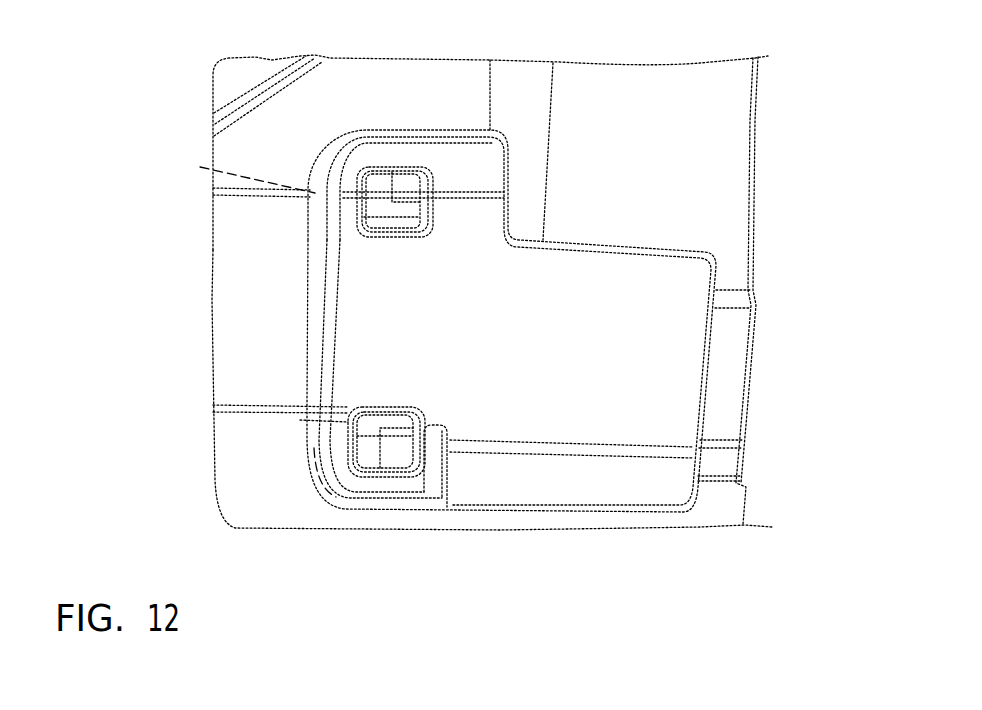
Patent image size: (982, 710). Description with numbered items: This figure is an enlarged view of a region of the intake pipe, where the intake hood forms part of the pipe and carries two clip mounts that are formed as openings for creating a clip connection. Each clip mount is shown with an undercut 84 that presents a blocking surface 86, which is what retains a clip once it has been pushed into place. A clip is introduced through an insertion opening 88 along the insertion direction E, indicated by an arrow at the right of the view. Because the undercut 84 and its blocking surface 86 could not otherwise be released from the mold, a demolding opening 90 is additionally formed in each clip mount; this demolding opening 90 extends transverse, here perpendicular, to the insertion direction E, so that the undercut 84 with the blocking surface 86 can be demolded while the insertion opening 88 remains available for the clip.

The undercut 84 is at (360, 238).
The blocking surface 86 is at (363, 182).
The insertion opening 88 is at (524, 164).
The demolding opening 90 is at (348, 196).
The insertion direction E is at (820, 351).